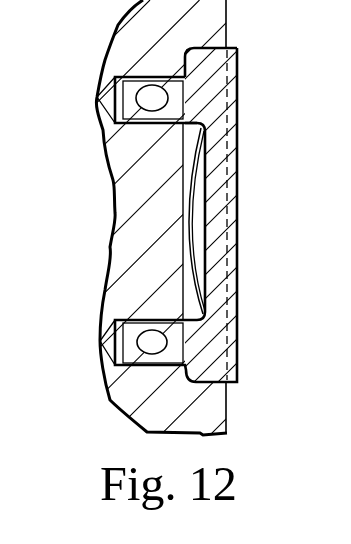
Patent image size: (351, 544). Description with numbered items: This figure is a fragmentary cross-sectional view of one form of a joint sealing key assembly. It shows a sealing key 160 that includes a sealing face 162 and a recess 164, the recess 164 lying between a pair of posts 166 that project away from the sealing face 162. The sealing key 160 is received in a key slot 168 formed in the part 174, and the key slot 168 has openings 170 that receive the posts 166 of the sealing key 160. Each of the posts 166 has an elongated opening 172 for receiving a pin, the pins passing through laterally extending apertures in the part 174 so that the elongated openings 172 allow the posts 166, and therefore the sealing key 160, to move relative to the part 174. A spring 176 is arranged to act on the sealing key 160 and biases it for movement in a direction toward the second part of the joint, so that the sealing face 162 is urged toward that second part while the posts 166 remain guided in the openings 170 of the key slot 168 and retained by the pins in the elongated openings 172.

The sealing key 160 is at (175, 272).
The sealing face 162 is at (230, 200).
The recess 164 is at (200, 172).
The posts 166 is at (128, 72).
The key slot 168 is at (226, 44).
The openings 170 is at (121, 120).
The elongated openings 172 is at (147, 354).
The part 174 is at (128, 247).
The spring 176 is at (192, 247).